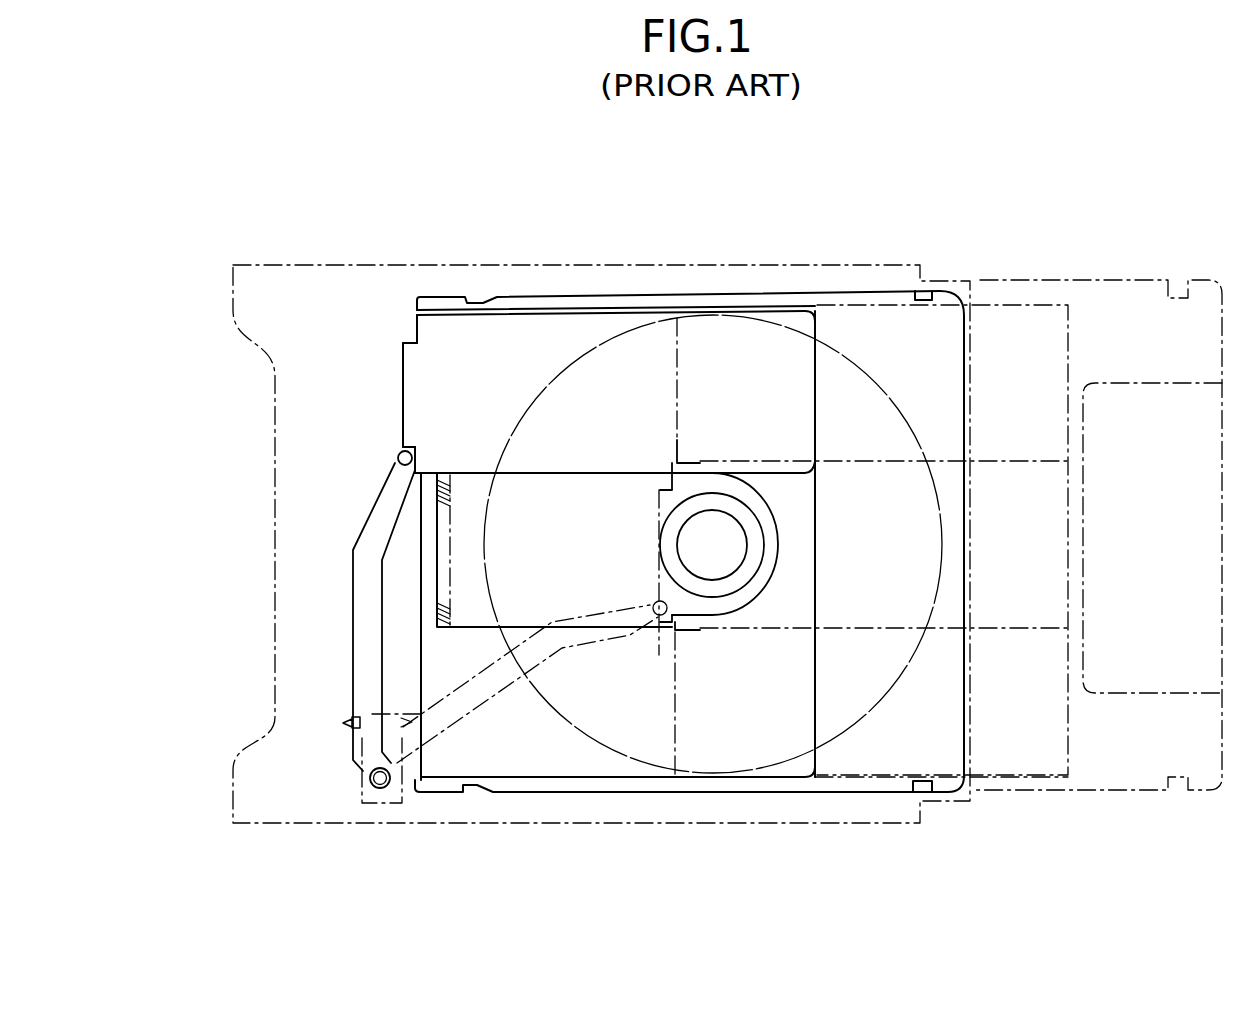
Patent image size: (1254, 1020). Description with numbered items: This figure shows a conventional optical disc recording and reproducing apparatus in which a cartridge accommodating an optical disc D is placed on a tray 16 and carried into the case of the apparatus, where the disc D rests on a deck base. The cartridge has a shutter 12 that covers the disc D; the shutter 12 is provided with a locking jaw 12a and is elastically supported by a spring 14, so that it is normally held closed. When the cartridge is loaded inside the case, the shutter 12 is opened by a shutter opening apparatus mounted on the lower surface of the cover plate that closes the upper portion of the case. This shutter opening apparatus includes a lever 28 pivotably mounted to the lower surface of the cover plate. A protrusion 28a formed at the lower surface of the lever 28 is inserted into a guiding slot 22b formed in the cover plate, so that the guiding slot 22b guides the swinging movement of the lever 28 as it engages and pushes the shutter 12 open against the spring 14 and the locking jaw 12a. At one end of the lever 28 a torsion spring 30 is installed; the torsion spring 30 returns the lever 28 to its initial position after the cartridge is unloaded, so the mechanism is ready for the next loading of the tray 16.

The shutter 12 is at (510, 340).
The locking jaw 12a is at (415, 343).
The spring 14 is at (403, 463).
The tray 16 is at (668, 826).
The guiding slot 22b is at (358, 715).
The lever 28 is at (363, 640).
The protrusion 28a is at (353, 727).
The torsion spring 30 is at (367, 768).
The optical disc D is at (915, 423).